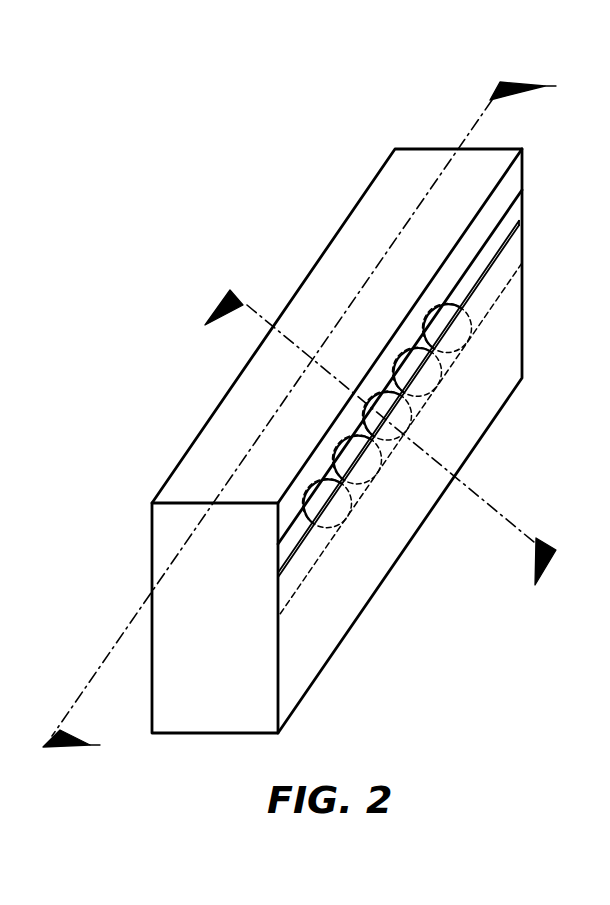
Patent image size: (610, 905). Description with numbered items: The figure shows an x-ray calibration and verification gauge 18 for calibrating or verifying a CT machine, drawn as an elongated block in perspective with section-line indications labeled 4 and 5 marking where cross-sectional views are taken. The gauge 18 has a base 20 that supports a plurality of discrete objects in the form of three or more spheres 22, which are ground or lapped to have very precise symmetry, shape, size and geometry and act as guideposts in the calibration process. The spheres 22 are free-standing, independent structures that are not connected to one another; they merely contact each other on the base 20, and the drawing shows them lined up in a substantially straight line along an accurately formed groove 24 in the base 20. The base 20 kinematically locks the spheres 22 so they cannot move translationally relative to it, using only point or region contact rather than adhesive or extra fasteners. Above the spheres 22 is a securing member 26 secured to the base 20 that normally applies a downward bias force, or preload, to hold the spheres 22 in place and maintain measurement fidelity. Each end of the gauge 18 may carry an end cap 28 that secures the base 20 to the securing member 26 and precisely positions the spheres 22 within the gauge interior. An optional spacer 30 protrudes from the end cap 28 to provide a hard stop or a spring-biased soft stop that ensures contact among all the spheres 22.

The gauge 18 is at (255, 207).
The base 20 is at (497, 341).
The spheres 22 is at (378, 465).
The groove 24 is at (312, 550).
The securing member 26 is at (408, 167).
The end cap 28 is at (215, 618).
The spacer 30 is at (288, 572).
The section line 4- 4 is at (371, 453).
The section line 5- 5 is at (305, 419).